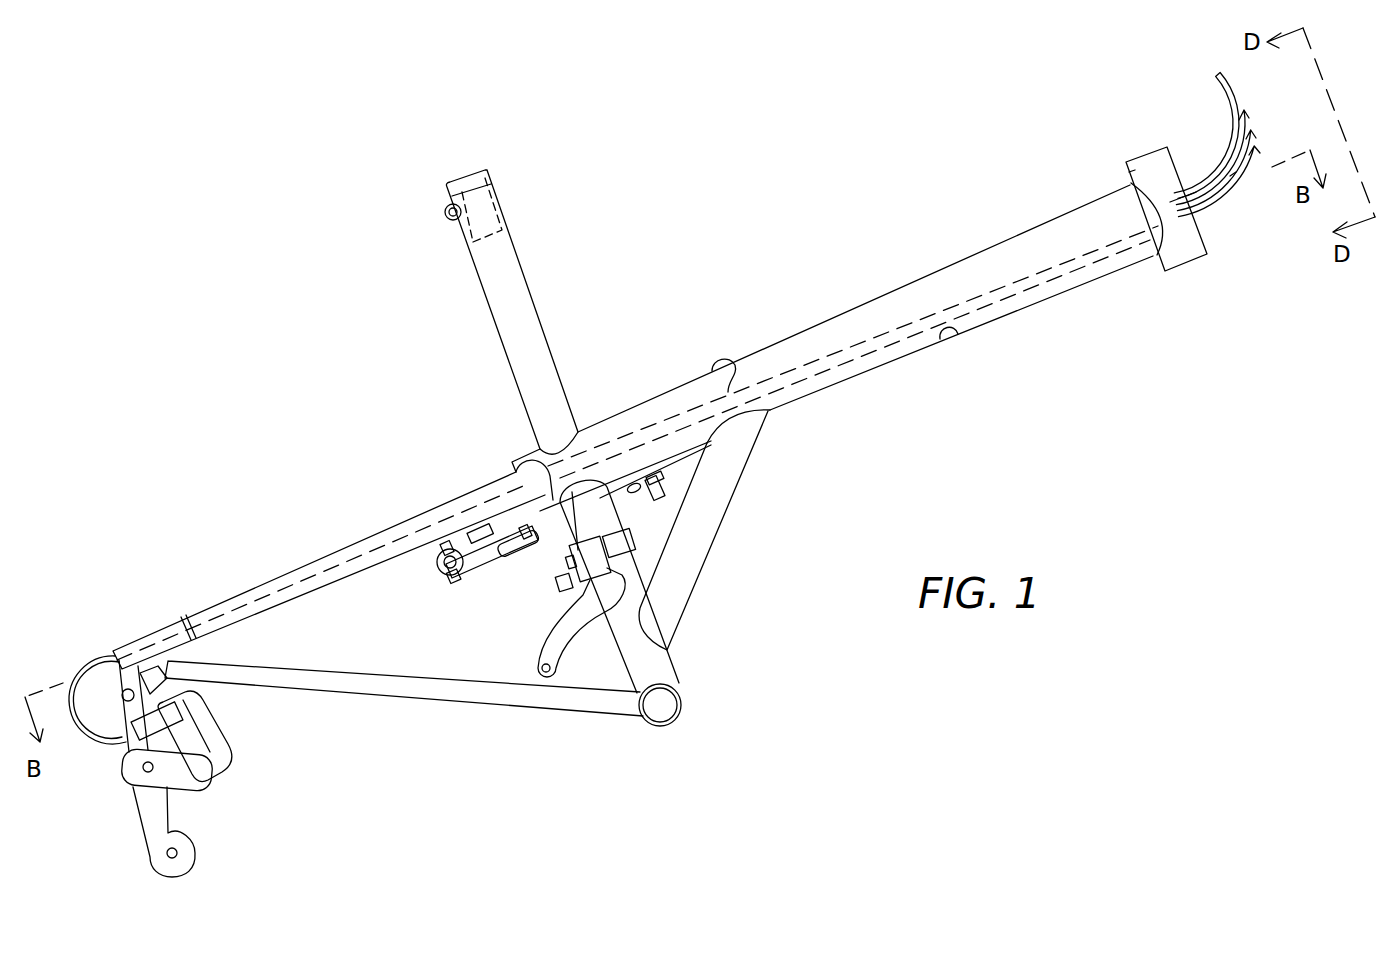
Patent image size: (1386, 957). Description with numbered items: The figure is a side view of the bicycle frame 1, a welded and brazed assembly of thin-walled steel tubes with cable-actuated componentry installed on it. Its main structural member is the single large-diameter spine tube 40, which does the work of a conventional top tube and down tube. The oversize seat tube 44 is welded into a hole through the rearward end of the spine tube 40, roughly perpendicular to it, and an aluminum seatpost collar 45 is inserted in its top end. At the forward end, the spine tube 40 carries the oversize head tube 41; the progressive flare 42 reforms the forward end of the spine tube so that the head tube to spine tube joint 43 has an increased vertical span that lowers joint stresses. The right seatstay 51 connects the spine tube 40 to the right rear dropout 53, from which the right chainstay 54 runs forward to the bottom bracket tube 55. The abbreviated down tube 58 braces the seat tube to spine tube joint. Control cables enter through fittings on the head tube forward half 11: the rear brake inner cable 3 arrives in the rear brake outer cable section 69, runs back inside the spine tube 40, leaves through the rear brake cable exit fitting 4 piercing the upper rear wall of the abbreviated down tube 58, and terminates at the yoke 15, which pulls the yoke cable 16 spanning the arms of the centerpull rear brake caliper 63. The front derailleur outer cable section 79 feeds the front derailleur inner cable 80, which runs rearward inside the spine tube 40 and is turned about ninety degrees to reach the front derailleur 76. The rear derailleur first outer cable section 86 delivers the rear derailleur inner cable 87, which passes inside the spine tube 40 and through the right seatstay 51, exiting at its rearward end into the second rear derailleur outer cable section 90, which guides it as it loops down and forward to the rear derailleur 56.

The bicycle frame 1 is at (913, 370).
The rear brake inner cable 3 is at (952, 335).
The rear brake cable exit fitting 4 is at (705, 445).
The head tube forward half 11 is at (1197, 232).
The yoke 15 is at (640, 490).
The yoke cable 16 is at (545, 532).
The spine tube 40 is at (768, 345).
The head tube 41 is at (1126, 170).
The progressive flare 42 is at (1076, 288).
The head tube to spine tube joint 43 is at (1150, 254).
The seat tube 44 is at (543, 325).
The seatpost collar 45 is at (478, 168).
The right seatstay 51 is at (298, 569).
The right rear dropout 53 is at (188, 657).
The right chainstay 54 is at (458, 703).
The bottom bracket tube 55 is at (662, 726).
The rear derailleur 56 is at (220, 738).
The abbreviated down tube 58 is at (733, 492).
The rear brake caliper 63 is at (445, 578).
The rear brake outer cable section 69 is at (1224, 158).
The front derailleur 76 is at (552, 634).
The front derailleur outer cable section 79 is at (1180, 174).
The front derailleur inner cable 80 is at (716, 372).
The rear derailleur first outer cable section 86 is at (1233, 178).
The rear derailleur inner cable 87 is at (1255, 142).
The second rear derailleur outer cable section 90 is at (108, 742).